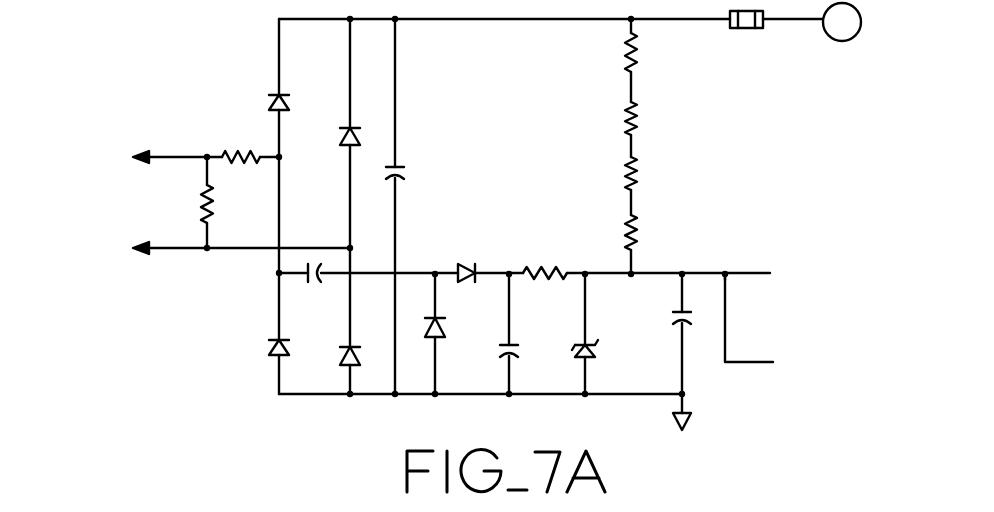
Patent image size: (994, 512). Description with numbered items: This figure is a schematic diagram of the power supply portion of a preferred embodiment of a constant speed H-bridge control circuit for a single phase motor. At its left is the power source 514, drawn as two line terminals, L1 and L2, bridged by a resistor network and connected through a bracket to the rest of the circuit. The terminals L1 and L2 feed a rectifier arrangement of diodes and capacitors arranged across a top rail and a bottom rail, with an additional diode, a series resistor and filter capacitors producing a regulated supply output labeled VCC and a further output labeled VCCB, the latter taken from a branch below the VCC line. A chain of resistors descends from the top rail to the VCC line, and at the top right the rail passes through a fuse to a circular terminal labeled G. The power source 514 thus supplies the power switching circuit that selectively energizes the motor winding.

The power source 514 is at (196, 197).
The line terminal L1 is at (223, 247).
The line terminal L2 is at (126, 167).
The VCC supply output VCC is at (829, 282).
The VCCB supply output VCCB is at (840, 371).
The generator G is at (842, 22).